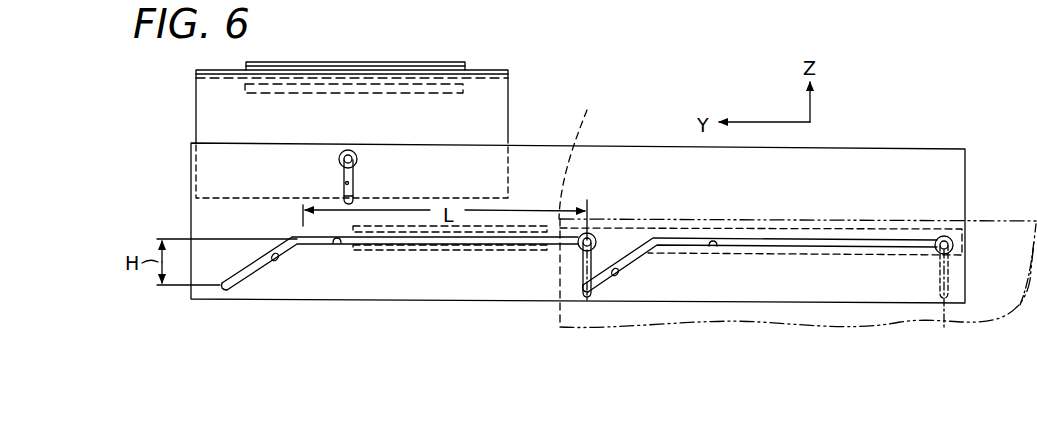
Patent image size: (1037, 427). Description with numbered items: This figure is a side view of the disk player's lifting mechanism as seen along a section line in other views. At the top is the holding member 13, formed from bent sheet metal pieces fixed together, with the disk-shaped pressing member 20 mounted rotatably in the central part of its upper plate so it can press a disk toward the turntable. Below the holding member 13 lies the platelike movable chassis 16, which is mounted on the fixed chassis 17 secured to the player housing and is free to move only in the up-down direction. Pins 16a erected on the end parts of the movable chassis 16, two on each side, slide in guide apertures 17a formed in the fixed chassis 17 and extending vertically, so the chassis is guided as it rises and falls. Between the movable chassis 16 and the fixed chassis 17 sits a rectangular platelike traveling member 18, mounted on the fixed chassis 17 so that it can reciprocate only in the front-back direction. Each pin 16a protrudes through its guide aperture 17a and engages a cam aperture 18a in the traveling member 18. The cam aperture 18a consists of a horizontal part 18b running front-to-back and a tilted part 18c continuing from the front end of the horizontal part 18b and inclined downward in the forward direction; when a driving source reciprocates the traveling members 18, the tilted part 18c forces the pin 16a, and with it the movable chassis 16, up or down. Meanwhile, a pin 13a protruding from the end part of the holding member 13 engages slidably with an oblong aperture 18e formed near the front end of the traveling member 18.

The holding member 13 is at (192, 108).
The pin 13a is at (340, 158).
The movable chassis 16 is at (798, 206).
The pin 16a is at (582, 249).
The fixed chassis 17 is at (1008, 310).
The guide aperture 17a is at (582, 256).
The traveling member 18 is at (226, 303).
The cam aperture 18a is at (371, 252).
The horizontal part 18b is at (333, 248).
The tilted part 18c is at (275, 262).
The oblong aperture 18e is at (344, 180).
The pressing member 20 is at (357, 62).